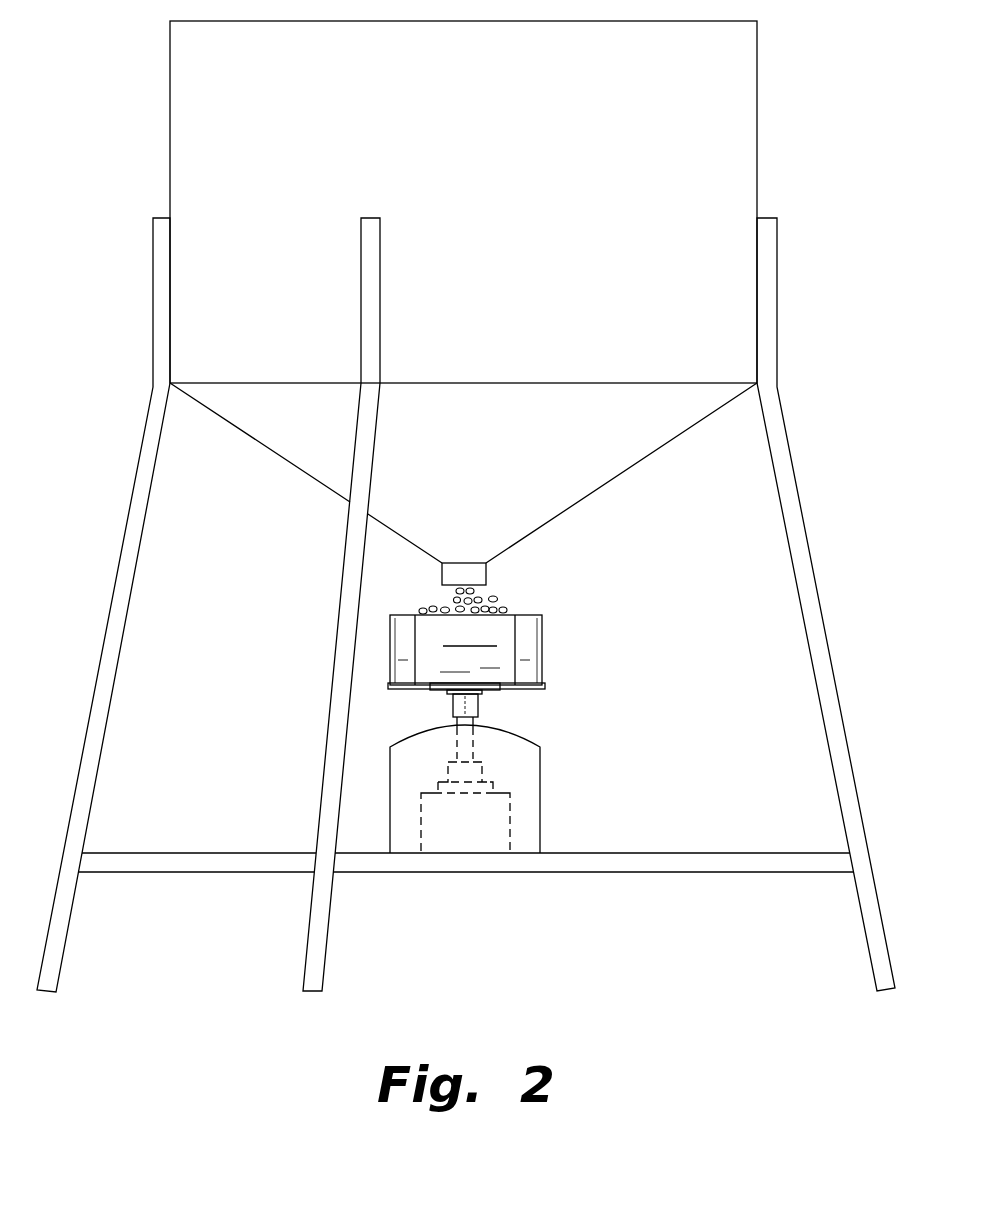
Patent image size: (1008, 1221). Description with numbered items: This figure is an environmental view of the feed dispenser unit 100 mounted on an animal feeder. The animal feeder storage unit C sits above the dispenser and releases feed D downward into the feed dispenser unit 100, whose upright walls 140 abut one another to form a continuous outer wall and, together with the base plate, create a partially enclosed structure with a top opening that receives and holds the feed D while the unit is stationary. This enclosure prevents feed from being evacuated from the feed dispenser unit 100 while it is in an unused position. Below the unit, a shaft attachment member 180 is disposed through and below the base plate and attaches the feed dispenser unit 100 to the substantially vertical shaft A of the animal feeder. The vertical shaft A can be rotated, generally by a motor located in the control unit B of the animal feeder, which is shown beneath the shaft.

The feed dispenser unit 100 is at (614, 589).
The animal feeder storage unit C is at (170, 138).
The feed D is at (451, 600).
The upright walls 140 is at (392, 637).
The shaft attachment member 180 is at (458, 703).
The vertical shaft A is at (473, 745).
The control unit B is at (510, 822).